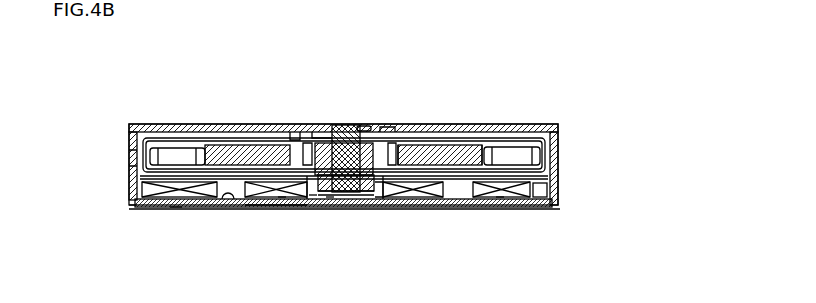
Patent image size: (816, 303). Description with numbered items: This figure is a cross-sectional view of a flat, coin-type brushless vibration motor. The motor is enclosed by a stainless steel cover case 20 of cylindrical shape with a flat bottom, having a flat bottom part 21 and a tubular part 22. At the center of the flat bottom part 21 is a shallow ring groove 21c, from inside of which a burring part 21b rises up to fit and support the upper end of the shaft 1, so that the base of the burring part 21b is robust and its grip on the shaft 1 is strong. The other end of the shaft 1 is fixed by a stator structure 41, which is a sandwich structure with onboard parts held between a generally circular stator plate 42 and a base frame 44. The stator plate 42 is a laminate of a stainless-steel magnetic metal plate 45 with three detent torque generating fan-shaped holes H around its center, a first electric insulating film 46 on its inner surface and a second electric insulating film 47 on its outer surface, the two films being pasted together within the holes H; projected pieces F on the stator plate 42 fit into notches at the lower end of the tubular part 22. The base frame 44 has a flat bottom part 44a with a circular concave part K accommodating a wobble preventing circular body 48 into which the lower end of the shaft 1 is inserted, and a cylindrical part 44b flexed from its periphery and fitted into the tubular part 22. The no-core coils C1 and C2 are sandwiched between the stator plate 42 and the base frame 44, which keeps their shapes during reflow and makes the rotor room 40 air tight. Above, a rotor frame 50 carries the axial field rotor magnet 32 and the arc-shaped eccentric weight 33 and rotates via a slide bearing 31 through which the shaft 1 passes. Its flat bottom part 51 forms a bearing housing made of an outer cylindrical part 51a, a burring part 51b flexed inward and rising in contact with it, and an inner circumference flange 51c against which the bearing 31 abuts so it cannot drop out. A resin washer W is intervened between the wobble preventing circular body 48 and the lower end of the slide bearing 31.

The shaft 1 is at (341, 124).
The cover case 20 is at (562, 119).
The flat bottom part 21 is at (184, 124).
The burring part 21b is at (362, 124).
The ring groove 21c is at (386, 124).
The tubular part 22 is at (128, 158).
The slide bearing 31 is at (376, 165).
The rotor magnet 32 is at (455, 147).
The eccentric weight 33 is at (540, 150).
The rotor room 40 is at (226, 140).
The stator structure 41 is at (660, 196).
The stator plate 42 is at (532, 216).
The base frame 44 is at (548, 168).
The flat bottom part 44a is at (163, 176).
The cylindrical part 44b is at (552, 194).
The magnetic metal plate 45 is at (362, 200).
The first electric insulating film 46 is at (223, 209).
The second electric insulating film 47 is at (258, 209).
The wobble preventing circular body 48 is at (383, 203).
The rotor frame 50 is at (462, 163).
The flat bottom part 51 is at (418, 147).
The outer cylindrical part 51a is at (295, 145).
The burring part 51b is at (316, 136).
The inner circumference flange 51c is at (320, 124).
The projected pieces F is at (131, 209).
The detent torque generating fan-shaped holes H is at (176, 210).
The circular concave part K is at (330, 200).
The resin washer W is at (314, 197).
The no-core coil C1 is at (500, 205).
The no-core coil C2 is at (282, 200).